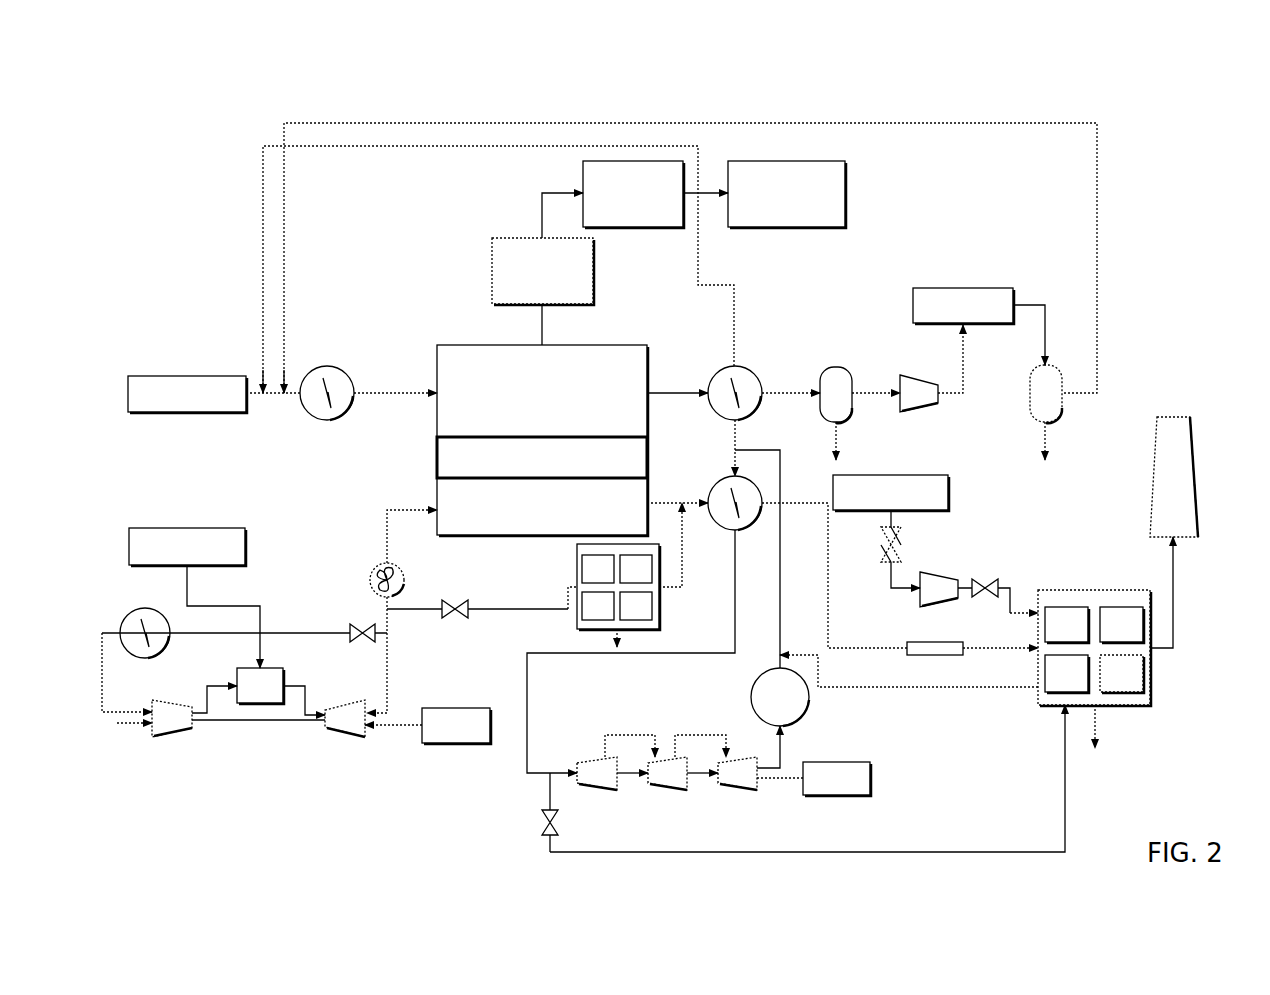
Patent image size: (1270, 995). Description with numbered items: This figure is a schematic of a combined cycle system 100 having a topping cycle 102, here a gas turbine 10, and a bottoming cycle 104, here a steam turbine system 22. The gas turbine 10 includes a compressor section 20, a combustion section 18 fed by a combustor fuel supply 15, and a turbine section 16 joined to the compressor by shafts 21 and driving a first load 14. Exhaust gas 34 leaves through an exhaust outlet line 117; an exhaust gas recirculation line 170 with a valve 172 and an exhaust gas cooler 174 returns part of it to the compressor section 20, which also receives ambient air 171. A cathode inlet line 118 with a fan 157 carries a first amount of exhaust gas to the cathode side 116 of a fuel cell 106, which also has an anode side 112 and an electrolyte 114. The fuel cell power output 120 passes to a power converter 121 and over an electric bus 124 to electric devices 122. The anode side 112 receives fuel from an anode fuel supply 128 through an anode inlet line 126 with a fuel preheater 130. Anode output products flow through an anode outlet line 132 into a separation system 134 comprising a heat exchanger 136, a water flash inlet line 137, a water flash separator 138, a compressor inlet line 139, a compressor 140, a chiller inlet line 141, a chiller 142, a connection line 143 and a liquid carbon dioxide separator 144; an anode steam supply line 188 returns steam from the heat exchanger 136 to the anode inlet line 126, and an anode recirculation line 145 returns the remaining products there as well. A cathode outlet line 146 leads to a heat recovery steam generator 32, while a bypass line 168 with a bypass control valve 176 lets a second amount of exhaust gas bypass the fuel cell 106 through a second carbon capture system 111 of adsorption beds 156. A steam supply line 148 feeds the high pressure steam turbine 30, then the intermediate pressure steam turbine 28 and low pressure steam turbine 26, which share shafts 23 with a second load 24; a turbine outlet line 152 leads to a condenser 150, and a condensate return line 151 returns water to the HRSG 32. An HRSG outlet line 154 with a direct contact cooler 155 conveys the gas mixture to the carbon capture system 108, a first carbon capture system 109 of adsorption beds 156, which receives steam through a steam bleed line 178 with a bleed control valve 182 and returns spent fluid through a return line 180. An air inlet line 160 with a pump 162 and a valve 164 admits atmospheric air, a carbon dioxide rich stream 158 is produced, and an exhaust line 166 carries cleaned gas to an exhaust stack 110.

The gas turbine 10 is at (328, 655).
The first load 14 is at (455, 745).
The combustor fuel supply 15 is at (190, 528).
The turbine section 16 is at (348, 735).
The combustion section 18 is at (245, 668).
The compressor section 20 is at (172, 737).
The shafts 21 is at (405, 737).
The steam turbine system 22 is at (600, 755).
The shafts 23 is at (768, 782).
The second load 24 is at (860, 762).
The low pressure steam turbine 26 is at (735, 790).
The intermediate pressure steam turbine 28 is at (665, 790).
The high pressure steam turbine 30 is at (595, 790).
The heat recovery steam generator 32 is at (725, 476).
The exhaust gas 34 is at (390, 668).
The combined cycle system 100 is at (1172, 170).
The topping cycle 102 is at (270, 585).
The bottoming cycle 104 is at (690, 735).
The fuel cell 106 is at (455, 298).
The carbon capture system 108 is at (1080, 590).
The first carbon capture system 109 is at (1120, 607).
The exhaust stack 110 is at (1158, 480).
The second carbon capture system 111 is at (662, 607).
The anode side 112 is at (437, 358).
The electrolyte 114 is at (437, 447).
The cathode side 116 is at (437, 490).
The exhaust outlet line 117 is at (390, 700).
The cathode inlet line 118 is at (385, 535).
The fuel cell power output 120 is at (540, 316).
The power converter 121 is at (520, 238).
The electric devices 122 is at (788, 227).
The electric bus 124 is at (628, 227).
The anode inlet line 126 is at (378, 393).
The anode fuel supply 128 is at (172, 376).
The fuel preheater 130 is at (332, 366).
The anode outlet line 132 is at (668, 388).
The separation system 134 is at (985, 228).
The heat exchanger 136 is at (760, 412).
The water flash inlet line 137 is at (783, 387).
The water flash separator 138 is at (836, 367).
The compressor inlet line 139 is at (862, 398).
The compressor 140 is at (925, 410).
The chiller inlet line 141 is at (965, 345).
The chiller 142 is at (955, 288).
The connection line 143 is at (1048, 330).
The liquid carbon dioxide separator 144 is at (1032, 410).
The anode recirculation line 145 is at (1097, 255).
The cathode outlet line 146 is at (660, 503).
The steam supply line 148 is at (585, 652).
The condenser 150 is at (810, 697).
The condensate return line 151 is at (782, 618).
The turbine outlet line 152 is at (790, 745).
The HRSG outlet line 154 is at (990, 648).
The direct contact cooler 155 is at (935, 655).
The adsorption beds 156 is at (650, 544).
The fan 157 is at (368, 575).
The carbon dioxide rich stream 158 is at (625, 635).
The air inlet line 160 is at (905, 548).
The pump 162 is at (930, 600).
The valve 164 is at (985, 578).
The exhaust line 166 is at (1185, 605).
The bypass line 168 is at (684, 565).
The exhaust gas recirculation line 170 is at (287, 630).
The ambient air 171 is at (130, 738).
The valve 172 is at (365, 644).
The exhaust gas cooler 174 is at (132, 610).
The bypass control valve 176 is at (465, 618).
The steam bleed line 178 is at (860, 853).
The return line 180 is at (975, 687).
The bleed control valve 182 is at (542, 822).
The anode steam supply line 188 is at (365, 146).